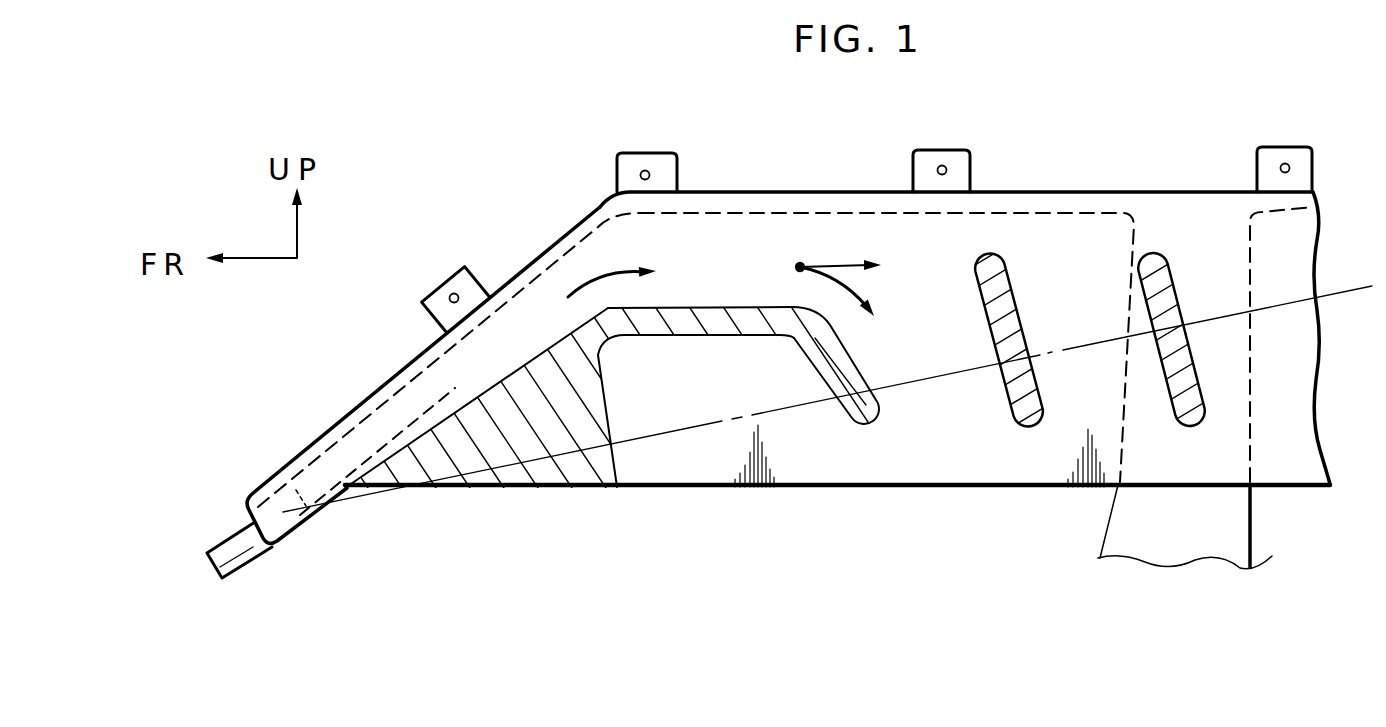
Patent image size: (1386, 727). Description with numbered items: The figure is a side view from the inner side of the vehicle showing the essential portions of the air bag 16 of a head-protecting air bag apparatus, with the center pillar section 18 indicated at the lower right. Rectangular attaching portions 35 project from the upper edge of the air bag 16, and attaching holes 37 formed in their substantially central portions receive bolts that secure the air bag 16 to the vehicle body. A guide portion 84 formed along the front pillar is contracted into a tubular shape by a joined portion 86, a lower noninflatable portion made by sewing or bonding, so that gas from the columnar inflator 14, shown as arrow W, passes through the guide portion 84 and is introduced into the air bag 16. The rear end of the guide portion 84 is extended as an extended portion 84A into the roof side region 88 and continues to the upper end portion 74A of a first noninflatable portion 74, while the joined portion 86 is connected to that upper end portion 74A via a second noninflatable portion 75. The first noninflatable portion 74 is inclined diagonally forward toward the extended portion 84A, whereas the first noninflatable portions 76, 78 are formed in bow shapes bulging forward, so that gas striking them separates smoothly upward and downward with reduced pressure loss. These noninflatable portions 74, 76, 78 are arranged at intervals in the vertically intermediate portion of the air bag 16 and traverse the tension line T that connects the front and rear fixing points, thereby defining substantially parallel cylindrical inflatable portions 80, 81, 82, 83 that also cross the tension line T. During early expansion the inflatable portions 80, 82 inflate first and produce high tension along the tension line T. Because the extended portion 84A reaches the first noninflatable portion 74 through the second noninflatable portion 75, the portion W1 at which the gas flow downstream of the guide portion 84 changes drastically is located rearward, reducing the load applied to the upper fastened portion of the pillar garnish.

The inflator 14 is at (250, 547).
The air bag 16 is at (1036, 500).
The center pillar section 18 is at (1262, 523).
The attaching portions 35 is at (447, 280).
The attaching holes 37 is at (456, 294).
The first noninflatable portion 74 is at (845, 415).
The upper end portion of the first noninflatable portion 74A is at (845, 350).
The second noninflatable portion 75 is at (669, 322).
The first noninflatable portion 76 is at (1000, 400).
The first noninflatable portion 78 is at (1172, 415).
The inflatable portion 80 is at (688, 407).
The inflatable portion 81 is at (907, 307).
The inflatable portion 82 is at (1063, 307).
The inflatable portion 83 is at (1228, 303).
The guide portion 84 is at (468, 361).
The extended portion 84A is at (708, 250).
The joined portion 86 is at (535, 438).
The roof side region 88 is at (815, 238).
The gas flow W is at (597, 273).
The portion at which gas flow changes drastically W1 is at (798, 270).
The tension line T is at (1262, 312).